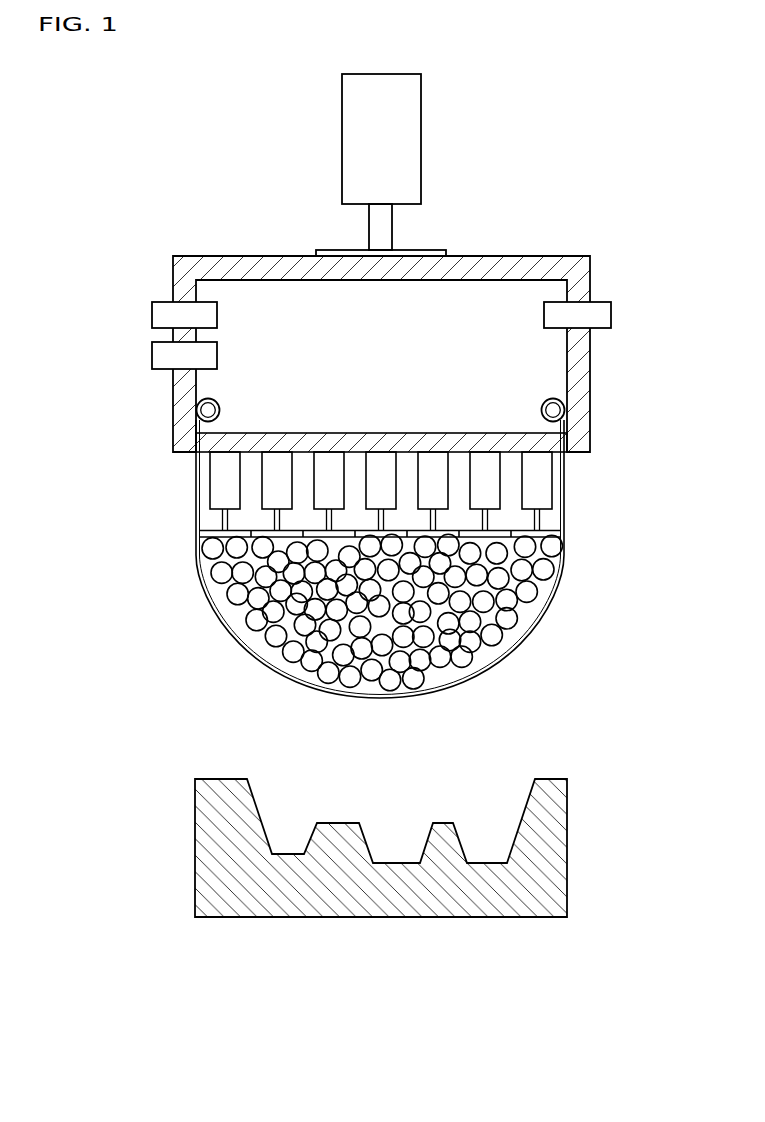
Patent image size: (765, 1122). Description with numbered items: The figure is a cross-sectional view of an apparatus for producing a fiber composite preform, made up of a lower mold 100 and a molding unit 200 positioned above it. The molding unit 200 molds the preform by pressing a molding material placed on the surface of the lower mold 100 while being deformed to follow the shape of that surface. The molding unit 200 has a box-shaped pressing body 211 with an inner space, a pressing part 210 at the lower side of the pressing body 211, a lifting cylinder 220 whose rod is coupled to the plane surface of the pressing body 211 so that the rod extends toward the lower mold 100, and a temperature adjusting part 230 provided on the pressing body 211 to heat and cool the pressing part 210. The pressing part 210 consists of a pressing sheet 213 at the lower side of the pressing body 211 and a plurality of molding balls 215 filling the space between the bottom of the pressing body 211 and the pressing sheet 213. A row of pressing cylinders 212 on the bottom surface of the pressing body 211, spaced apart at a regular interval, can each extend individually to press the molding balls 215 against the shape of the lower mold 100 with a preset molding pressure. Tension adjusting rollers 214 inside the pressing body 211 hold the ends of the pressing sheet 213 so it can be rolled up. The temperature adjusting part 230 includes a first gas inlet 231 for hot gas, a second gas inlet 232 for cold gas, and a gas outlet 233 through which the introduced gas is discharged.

The lower mold 100 is at (555, 862).
The molding unit 200 is at (382, 563).
The pressing part 210 is at (387, 712).
The pressing body 211 is at (539, 260).
The pressing cylinders 212 is at (220, 490).
The pressing sheet 213 is at (540, 615).
The tension adjusting roller 214 is at (565, 408).
The molding balls 215 is at (553, 547).
The lifting cylinder 220 is at (411, 138).
The temperature adjusting part 230 is at (382, 677).
The first gas inlet 231 is at (162, 313).
The second gas inlet 232 is at (162, 357).
The gas outlet 233 is at (602, 318).